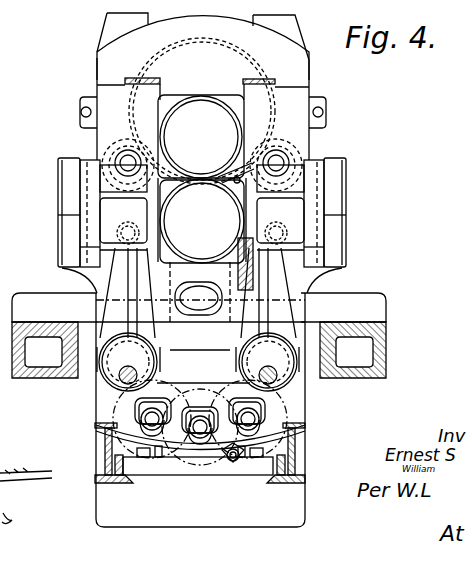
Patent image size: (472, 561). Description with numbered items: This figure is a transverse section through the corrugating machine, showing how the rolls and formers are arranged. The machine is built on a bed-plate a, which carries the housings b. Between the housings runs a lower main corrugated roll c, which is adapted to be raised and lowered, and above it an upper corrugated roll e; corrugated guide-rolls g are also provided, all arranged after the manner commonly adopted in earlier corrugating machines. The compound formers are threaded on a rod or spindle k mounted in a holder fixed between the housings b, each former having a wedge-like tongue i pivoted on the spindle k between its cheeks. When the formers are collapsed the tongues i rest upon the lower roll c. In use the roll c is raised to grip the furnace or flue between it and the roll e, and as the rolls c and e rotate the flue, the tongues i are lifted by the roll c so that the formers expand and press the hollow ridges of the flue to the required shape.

The bed-plate a is at (199, 335).
The housings b is at (202, 153).
The lower main corrugated roll c is at (202, 221).
The upper corrugated roll e is at (201, 136).
The corrugated guide-rolls g is at (97, 147).
The wedge-like tongue i is at (248, 169).
The rod or spindle k is at (280, 188).